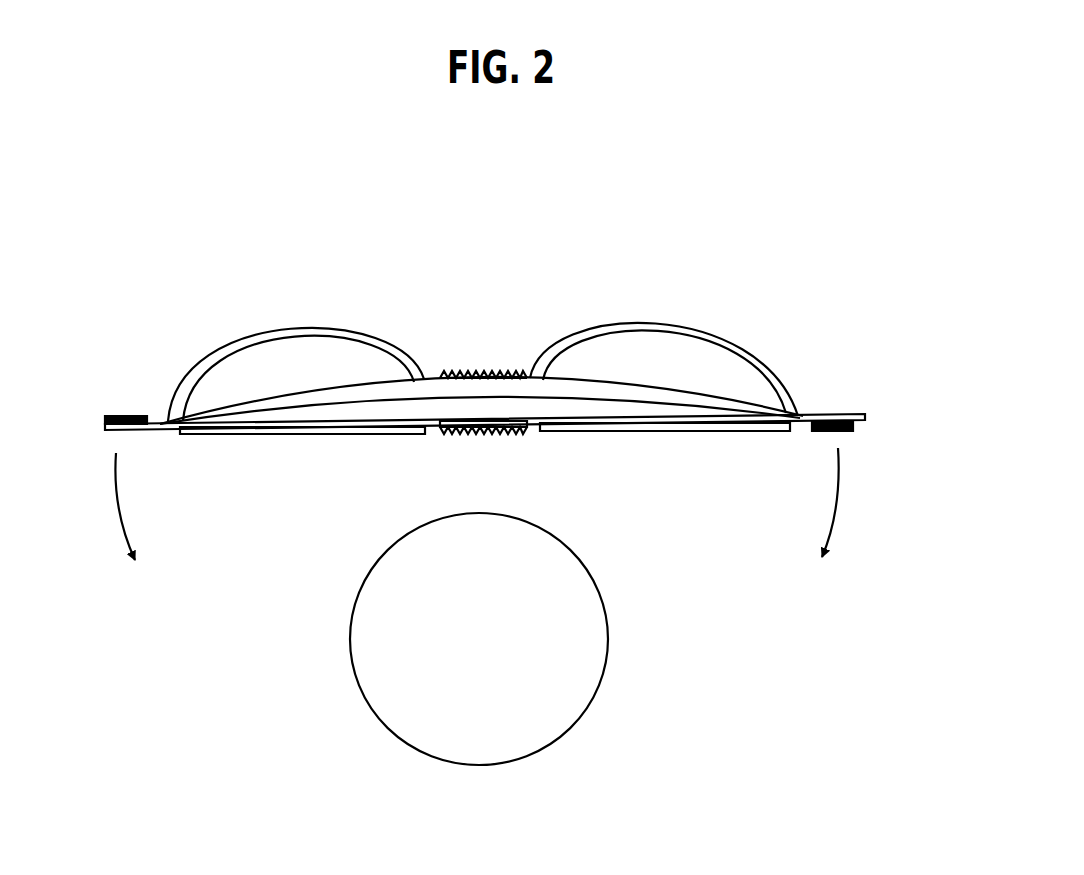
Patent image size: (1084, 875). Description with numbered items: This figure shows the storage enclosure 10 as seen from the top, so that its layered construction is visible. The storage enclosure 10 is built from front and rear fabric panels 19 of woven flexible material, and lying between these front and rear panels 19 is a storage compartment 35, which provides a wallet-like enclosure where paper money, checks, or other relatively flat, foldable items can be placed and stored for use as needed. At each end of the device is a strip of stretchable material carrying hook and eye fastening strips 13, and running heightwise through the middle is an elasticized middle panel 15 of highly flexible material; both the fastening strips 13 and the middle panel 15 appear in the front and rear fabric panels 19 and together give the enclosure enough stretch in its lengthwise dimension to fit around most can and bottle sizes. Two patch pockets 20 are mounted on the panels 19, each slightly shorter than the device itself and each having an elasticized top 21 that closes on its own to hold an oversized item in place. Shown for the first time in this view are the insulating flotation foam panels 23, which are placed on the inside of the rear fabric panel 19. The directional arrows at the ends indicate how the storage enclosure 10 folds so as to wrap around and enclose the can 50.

The storage enclosure 10 is at (262, 515).
The hook and eye fastening strips 13 is at (123, 417).
The elasticized middle panel 15 is at (490, 368).
The fabric panels 19 is at (423, 380).
The patch pockets 20 is at (293, 367).
The elasticized top 21 is at (340, 332).
The insulating flotation foam panels 23 is at (255, 428).
The storage compartment 35 is at (428, 403).
The can 50 is at (604, 662).